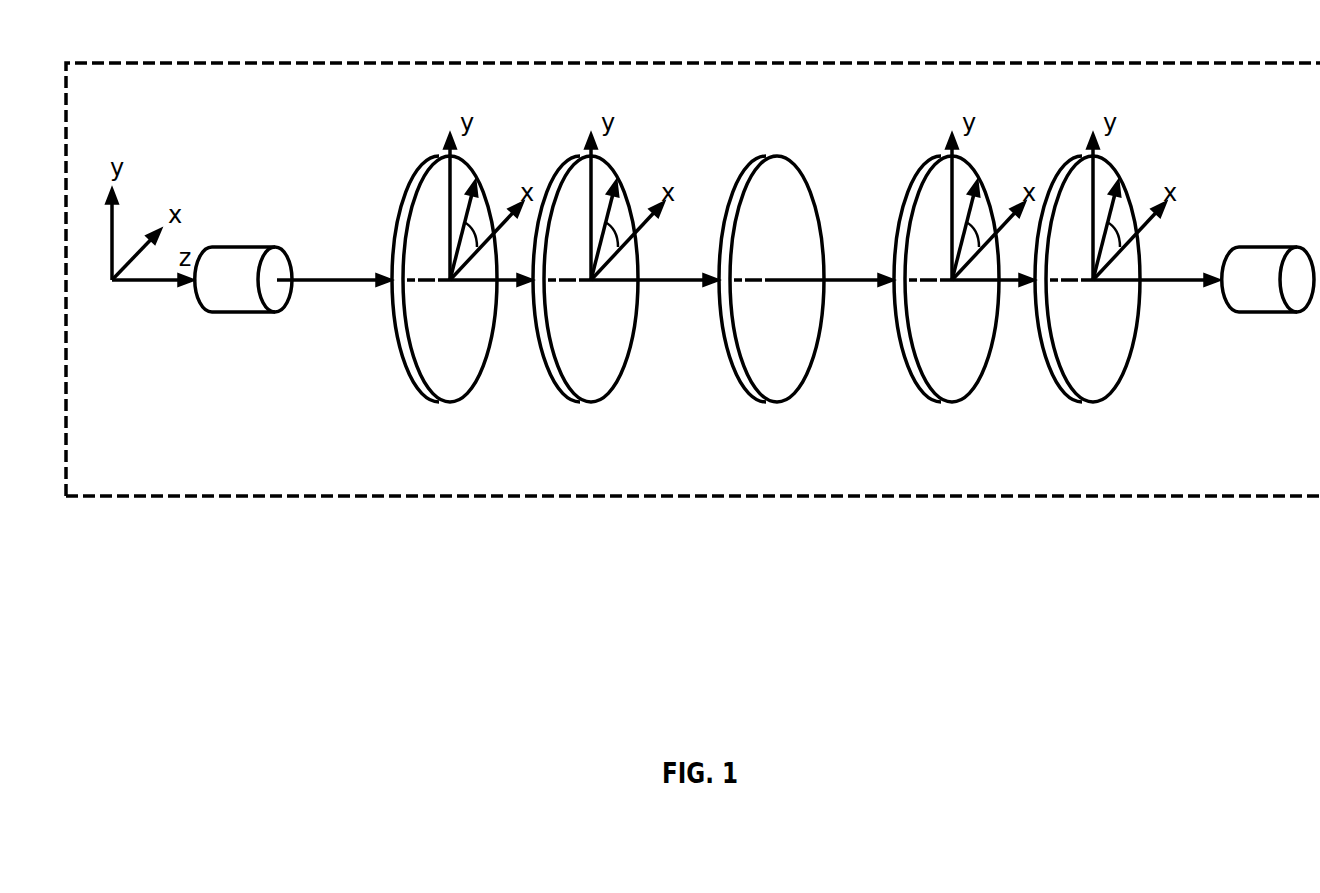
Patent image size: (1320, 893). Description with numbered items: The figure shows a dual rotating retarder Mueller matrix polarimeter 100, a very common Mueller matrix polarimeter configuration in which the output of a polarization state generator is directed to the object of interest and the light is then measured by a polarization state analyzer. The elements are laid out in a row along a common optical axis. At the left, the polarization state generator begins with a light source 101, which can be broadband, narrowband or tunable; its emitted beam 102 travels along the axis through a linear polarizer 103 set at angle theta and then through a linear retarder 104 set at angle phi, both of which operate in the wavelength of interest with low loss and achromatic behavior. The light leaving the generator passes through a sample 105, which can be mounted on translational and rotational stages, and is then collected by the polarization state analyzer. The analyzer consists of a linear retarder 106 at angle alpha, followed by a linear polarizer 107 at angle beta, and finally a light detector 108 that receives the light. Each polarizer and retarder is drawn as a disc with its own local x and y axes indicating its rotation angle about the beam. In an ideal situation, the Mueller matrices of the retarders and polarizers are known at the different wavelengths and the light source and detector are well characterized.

The dual rotating retarder Mueller matrix polarimeter 100 is at (693, 252).
The light source 101 is at (233, 312).
The light beam 102 is at (342, 278).
The linear polarizer 103 is at (412, 388).
The linear retarder 104 is at (558, 388).
The sample 105 is at (790, 397).
The linear retarder 106 is at (970, 397).
The linear polarizer 107 is at (1113, 393).
The light detector 108 is at (1265, 310).